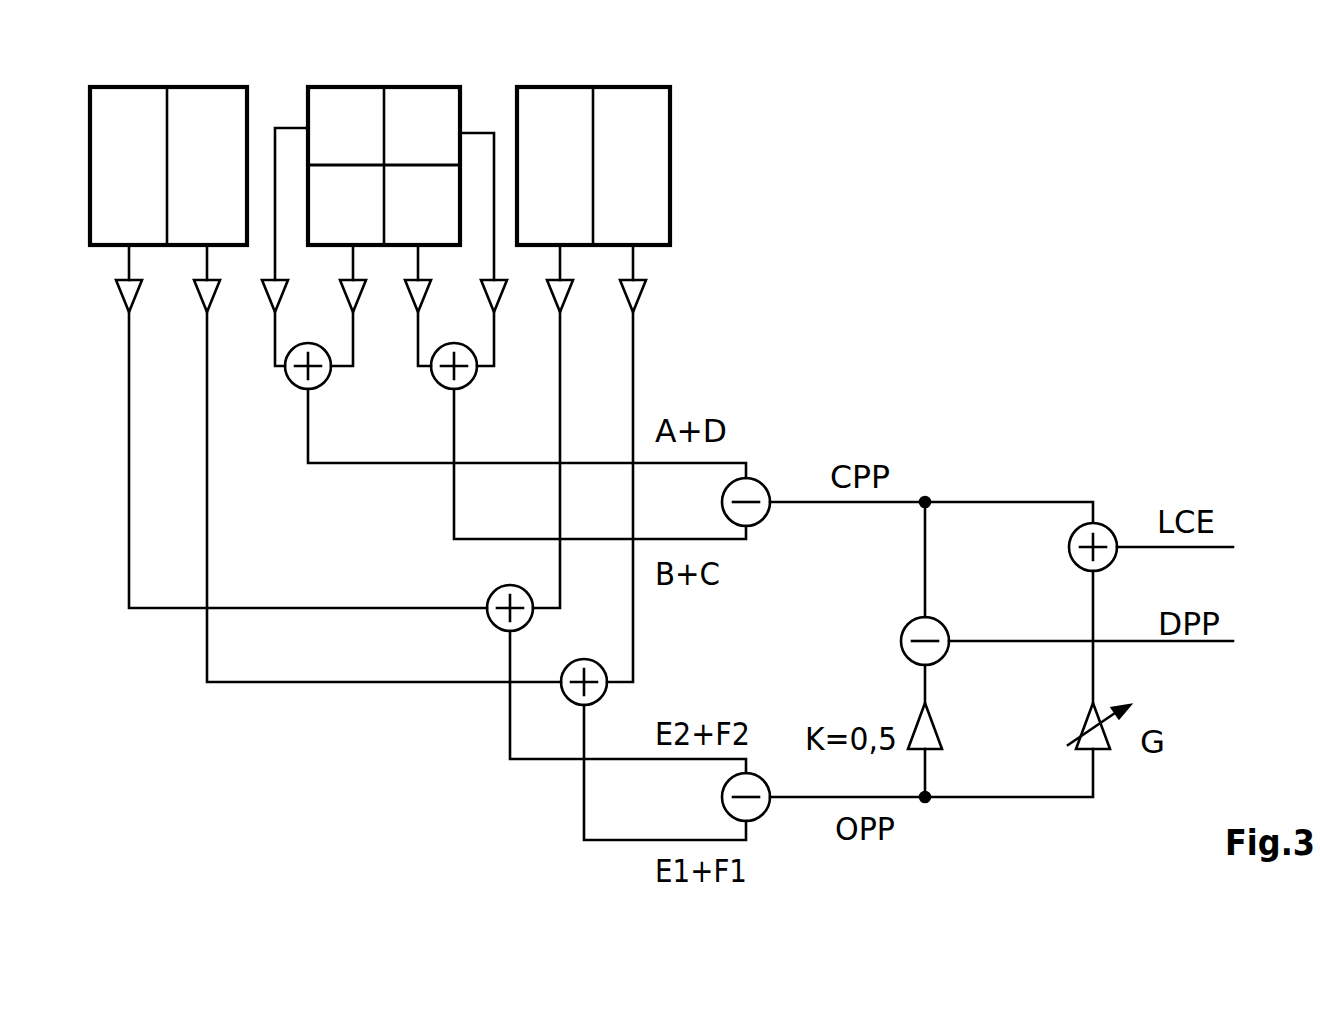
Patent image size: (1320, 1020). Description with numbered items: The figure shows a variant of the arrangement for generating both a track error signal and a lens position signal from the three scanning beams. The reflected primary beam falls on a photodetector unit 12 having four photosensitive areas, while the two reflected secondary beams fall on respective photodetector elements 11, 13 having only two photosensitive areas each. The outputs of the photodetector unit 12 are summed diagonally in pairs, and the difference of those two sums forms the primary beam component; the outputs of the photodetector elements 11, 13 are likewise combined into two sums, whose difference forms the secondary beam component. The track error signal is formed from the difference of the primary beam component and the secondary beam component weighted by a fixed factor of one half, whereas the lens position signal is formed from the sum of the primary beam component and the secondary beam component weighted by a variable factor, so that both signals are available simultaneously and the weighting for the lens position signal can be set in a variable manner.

The photodetector element 11 is at (177, 86).
The photodetector unit 12 is at (389, 86).
The photodetector element 13 is at (606, 86).